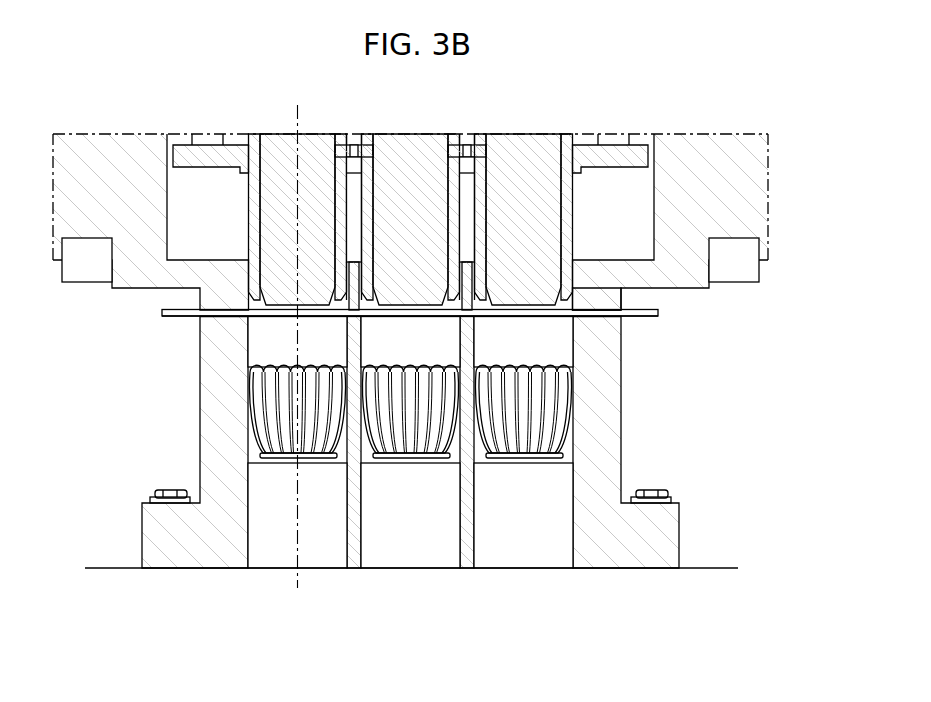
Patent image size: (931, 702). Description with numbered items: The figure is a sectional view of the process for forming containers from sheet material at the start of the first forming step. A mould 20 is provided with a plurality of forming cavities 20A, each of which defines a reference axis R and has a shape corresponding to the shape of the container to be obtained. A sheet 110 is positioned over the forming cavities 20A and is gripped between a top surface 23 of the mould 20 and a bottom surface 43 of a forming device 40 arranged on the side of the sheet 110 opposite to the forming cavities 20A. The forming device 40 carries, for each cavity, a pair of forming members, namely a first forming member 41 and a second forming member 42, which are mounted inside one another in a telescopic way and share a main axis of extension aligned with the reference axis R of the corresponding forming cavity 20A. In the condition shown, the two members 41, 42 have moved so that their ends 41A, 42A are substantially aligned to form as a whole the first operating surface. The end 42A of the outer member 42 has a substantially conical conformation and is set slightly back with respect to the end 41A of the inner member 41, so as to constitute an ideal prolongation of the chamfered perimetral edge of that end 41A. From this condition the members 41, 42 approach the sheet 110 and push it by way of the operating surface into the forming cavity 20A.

The mould 20 is at (177, 467).
The forming cavity 20A is at (275, 414).
The top surface of the mould 23 is at (609, 313).
The forming device 40 is at (118, 290).
The first forming member 41 is at (275, 277).
The end of the first forming member 41A is at (395, 285).
The second forming member 42 is at (249, 231).
The end of the second forming member 42A is at (478, 285).
The bottom surface of the forming device 43 is at (591, 318).
The sheet 110 is at (175, 313).
The reference axis R is at (296, 575).